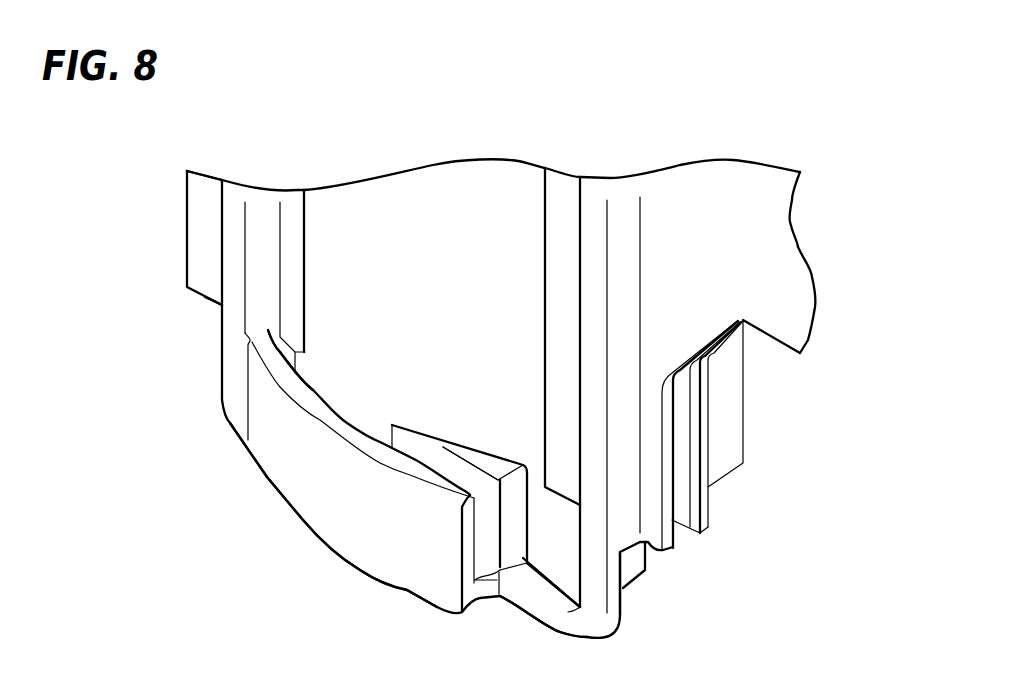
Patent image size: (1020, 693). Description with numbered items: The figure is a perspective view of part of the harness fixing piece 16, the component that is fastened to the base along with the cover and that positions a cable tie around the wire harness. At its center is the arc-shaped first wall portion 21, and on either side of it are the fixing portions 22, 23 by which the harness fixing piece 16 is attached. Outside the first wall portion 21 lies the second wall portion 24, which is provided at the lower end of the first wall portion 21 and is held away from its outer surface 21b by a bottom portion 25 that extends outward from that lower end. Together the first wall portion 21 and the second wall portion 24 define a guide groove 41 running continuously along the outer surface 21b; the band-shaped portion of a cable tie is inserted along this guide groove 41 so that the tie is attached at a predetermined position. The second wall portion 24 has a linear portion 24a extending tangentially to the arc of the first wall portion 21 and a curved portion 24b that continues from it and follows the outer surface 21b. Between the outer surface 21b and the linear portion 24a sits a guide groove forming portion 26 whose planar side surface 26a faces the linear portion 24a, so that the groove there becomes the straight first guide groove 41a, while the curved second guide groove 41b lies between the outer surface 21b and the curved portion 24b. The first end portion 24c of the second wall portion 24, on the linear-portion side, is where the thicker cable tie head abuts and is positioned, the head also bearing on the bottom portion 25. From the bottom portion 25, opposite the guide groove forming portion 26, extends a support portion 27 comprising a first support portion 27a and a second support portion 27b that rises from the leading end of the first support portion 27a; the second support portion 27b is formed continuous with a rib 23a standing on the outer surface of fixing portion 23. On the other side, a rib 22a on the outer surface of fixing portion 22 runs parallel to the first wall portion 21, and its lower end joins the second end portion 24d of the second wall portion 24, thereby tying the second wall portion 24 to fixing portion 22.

The harness fixing piece 16 is at (848, 168).
The first wall portion 21 is at (433, 165).
The outer surface of the first wall portion 21b is at (368, 198).
The fixing portion 22 is at (205, 172).
The rib 22a is at (232, 277).
The fixing portion 23 is at (693, 163).
The rib 23a is at (623, 267).
The second wall portion 24 is at (330, 523).
The linear portion 24a is at (403, 552).
The curved portion 24b is at (287, 462).
The first end portion 24c is at (462, 540).
The second end portion 24d is at (253, 372).
The bottom portion 25 is at (483, 600).
The guide groove forming portion 26 is at (503, 463).
The side surface 26a is at (480, 480).
The support portion 27 is at (613, 630).
The first support portion 27a is at (548, 613).
The second support portion 27b is at (615, 590).
The guide groove 41 is at (378, 431).
The first guide groove 41a is at (433, 459).
The second guide groove 41b is at (316, 379).